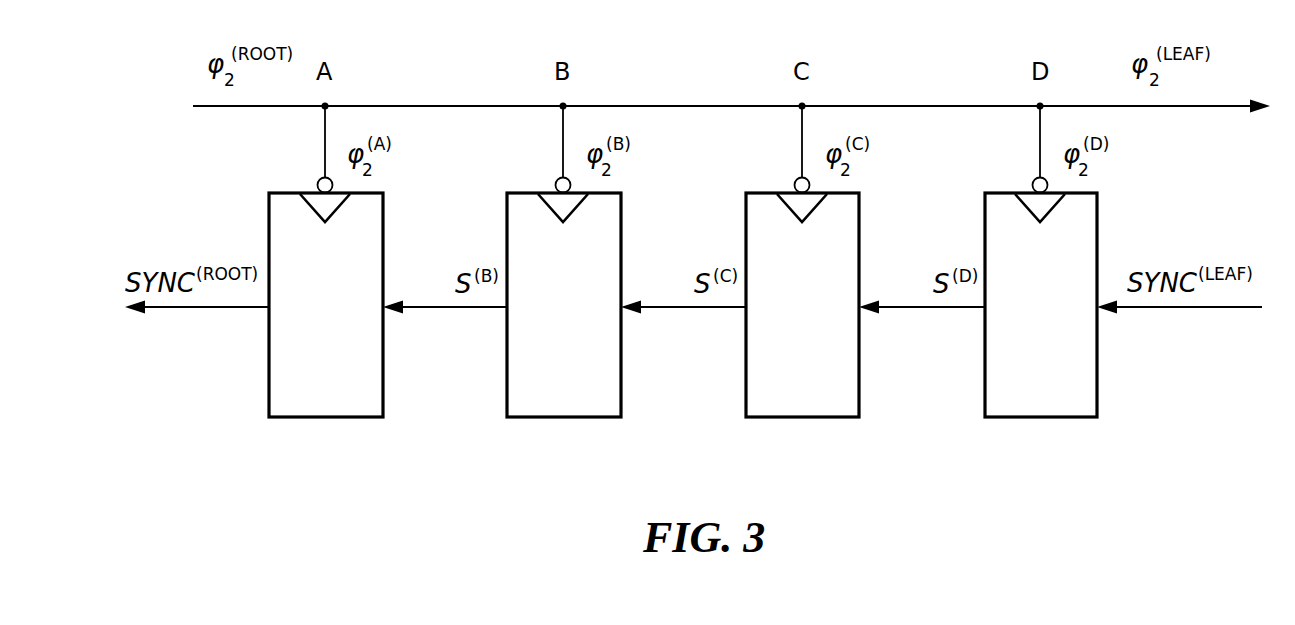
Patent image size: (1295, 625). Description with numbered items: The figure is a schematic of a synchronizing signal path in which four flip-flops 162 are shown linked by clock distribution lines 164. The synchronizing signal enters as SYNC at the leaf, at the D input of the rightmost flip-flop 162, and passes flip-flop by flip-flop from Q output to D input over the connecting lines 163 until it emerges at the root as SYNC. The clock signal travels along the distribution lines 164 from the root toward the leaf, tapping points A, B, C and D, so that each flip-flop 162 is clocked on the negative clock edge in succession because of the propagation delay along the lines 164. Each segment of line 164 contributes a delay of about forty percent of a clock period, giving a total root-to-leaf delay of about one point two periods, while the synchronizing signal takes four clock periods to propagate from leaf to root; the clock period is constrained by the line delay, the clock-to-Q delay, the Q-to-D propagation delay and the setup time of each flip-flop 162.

The flip-flop 162 is at (683, 298).
The interconnect line 163 is at (414, 304).
The clock distribution line 164 is at (448, 103).